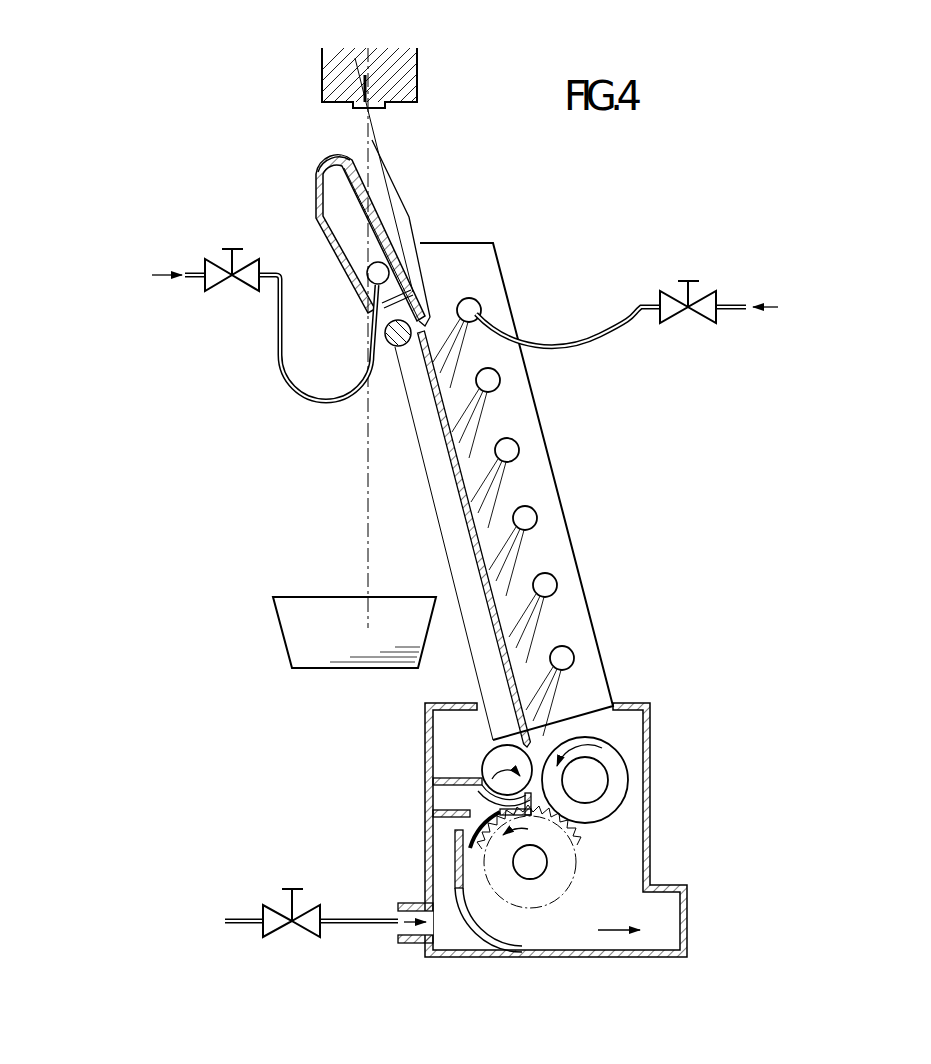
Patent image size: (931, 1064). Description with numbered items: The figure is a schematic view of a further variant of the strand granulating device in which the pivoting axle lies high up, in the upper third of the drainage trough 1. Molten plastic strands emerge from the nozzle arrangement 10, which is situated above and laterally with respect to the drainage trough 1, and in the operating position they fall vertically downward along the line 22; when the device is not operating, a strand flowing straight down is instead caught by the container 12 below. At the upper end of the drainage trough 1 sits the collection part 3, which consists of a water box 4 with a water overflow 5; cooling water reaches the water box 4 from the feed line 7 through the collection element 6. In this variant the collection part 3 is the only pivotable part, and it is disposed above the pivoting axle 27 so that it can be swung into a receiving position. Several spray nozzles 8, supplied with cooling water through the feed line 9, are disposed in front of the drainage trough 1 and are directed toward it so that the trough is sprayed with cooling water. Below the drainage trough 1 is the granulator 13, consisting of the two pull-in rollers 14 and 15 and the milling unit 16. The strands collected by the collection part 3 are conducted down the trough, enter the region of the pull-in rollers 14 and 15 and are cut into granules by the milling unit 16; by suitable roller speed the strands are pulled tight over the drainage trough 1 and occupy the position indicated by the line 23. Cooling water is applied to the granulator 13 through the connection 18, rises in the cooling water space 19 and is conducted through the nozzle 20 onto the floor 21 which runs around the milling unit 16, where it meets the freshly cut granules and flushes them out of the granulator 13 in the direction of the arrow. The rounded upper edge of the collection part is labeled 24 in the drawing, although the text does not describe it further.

The drainage trough 1 is at (404, 457).
The collection part 3 is at (385, 240).
The water box 4 is at (330, 198).
The water overflow 5 is at (353, 174).
The collection element 6 is at (373, 264).
The feed line 7 is at (294, 389).
The spray nozzles 8 is at (514, 451).
The feed line 9 is at (598, 345).
The nozzle arrangement 10 is at (398, 78).
The container 12 is at (325, 607).
The granulator 13 is at (665, 803).
The pull-in roller 14 is at (495, 760).
The pull-in roller 15 is at (614, 770).
The milling unit 16 is at (560, 877).
The connection 18 is at (405, 905).
The cooling water space 19 is at (440, 850).
The nozzle 20 is at (466, 838).
The floor 21 is at (485, 922).
The line 22 is at (366, 515).
The line 23 is at (380, 148).
The rounded hood edge 24 is at (334, 153).
The pivoting axle 27 is at (397, 348).